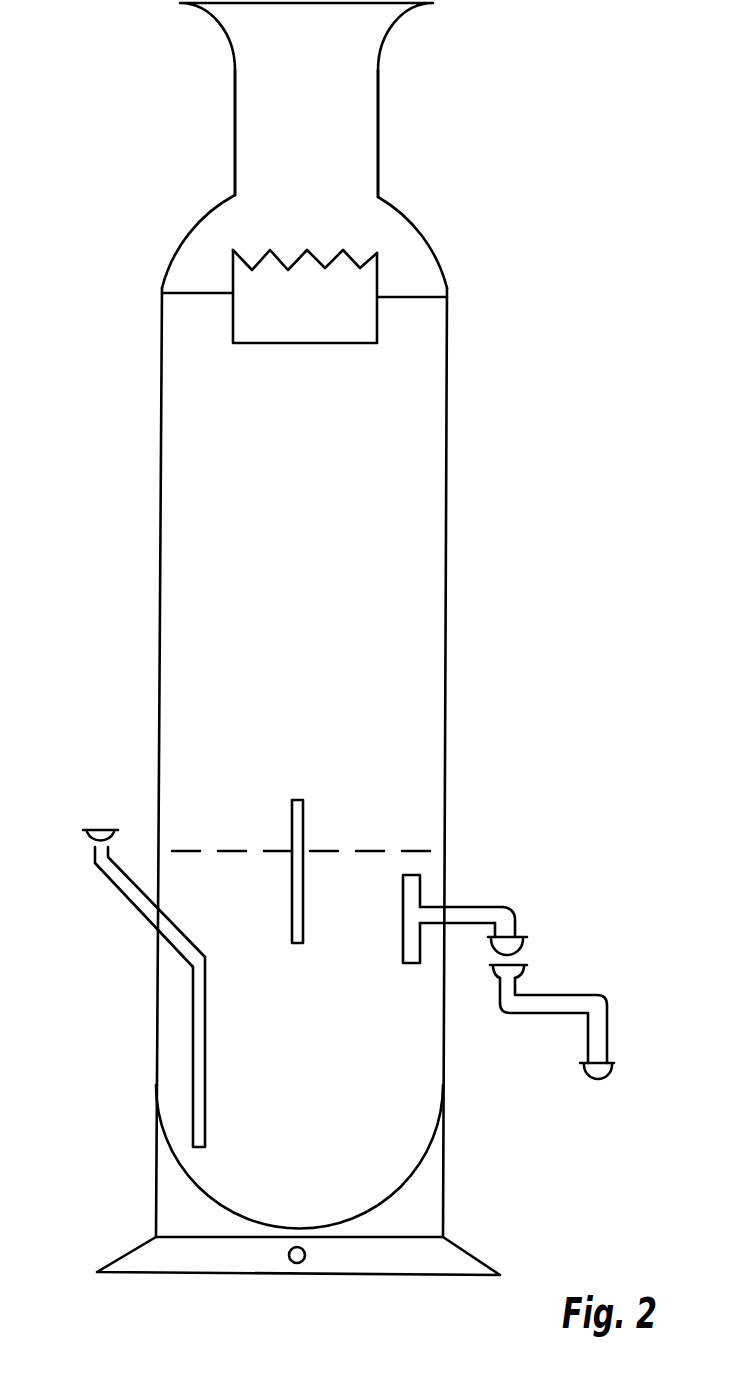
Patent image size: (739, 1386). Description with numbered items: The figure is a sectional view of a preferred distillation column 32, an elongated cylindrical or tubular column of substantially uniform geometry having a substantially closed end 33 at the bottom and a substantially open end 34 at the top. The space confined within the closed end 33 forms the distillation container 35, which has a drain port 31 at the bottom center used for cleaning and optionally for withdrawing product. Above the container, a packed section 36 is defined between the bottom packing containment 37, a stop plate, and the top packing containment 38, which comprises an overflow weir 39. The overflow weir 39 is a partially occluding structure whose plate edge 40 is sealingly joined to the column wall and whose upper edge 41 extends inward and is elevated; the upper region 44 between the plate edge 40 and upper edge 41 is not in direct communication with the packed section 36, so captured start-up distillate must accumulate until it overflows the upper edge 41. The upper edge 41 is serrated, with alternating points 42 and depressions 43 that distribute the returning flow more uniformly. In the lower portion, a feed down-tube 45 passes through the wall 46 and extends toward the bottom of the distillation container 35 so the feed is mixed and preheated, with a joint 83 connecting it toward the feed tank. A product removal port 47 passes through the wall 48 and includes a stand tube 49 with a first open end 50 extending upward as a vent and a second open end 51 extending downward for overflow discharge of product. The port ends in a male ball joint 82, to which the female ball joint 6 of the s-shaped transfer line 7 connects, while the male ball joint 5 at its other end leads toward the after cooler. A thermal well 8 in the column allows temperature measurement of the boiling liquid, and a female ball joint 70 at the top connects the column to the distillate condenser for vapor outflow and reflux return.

The male ball joint 5 is at (600, 1080).
The female ball joint 6 is at (517, 972).
The transfer line 7 is at (568, 997).
The thermal well 8 is at (302, 798).
The drain port 31 is at (297, 1263).
The distillation column 32 is at (160, 547).
The substantially closed end 33 is at (402, 1185).
The substantially open end 34 is at (235, 195).
The distillation container 35 is at (290, 1162).
The packed section 36 is at (290, 762).
The bottom packing containment 37 is at (367, 850).
The top packing containment 38 is at (339, 301).
The overflow weir 39 is at (303, 233).
The plate edge 40 is at (162, 293).
The upper edge 41 is at (233, 250).
The points 42 is at (297, 197).
The depressions 43 is at (362, 267).
The upper region 44 is at (417, 295).
The feed down-tube 45 is at (187, 1048).
The wall 46 is at (155, 933).
The product removal port 47 is at (480, 905).
The wall 48 is at (447, 907).
The stand tube 49 is at (474, 983).
The first open end 50 is at (415, 873).
The second open end 51 is at (464, 931).
The female ball joint 70 is at (427, 37).
The male ball joint 82 is at (523, 940).
The joint 83 is at (102, 822).